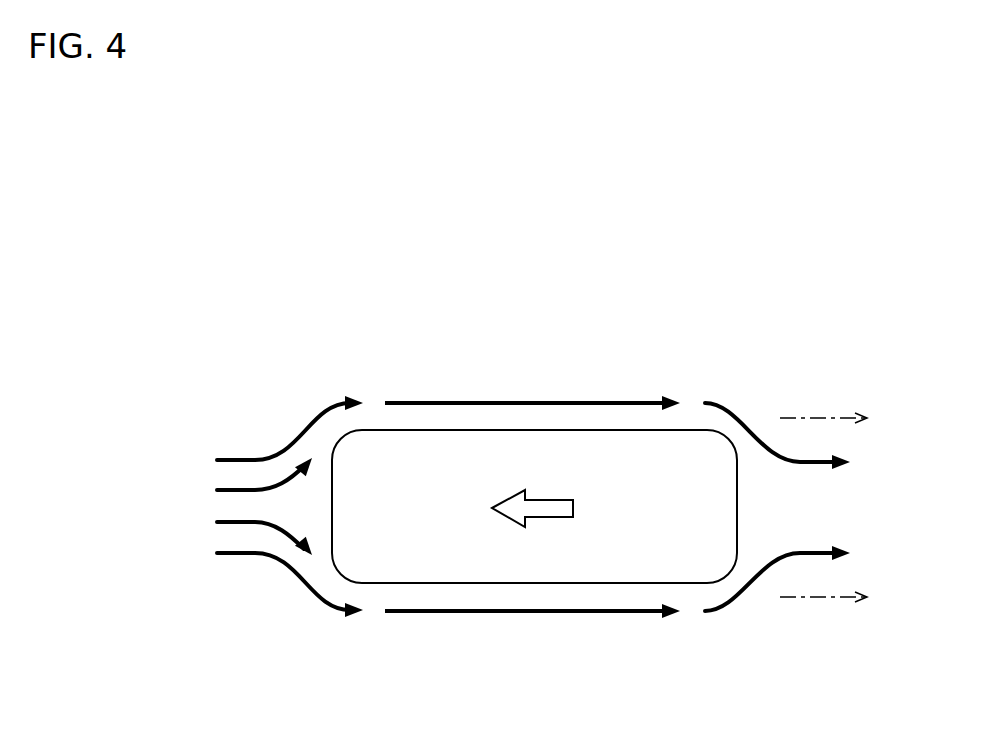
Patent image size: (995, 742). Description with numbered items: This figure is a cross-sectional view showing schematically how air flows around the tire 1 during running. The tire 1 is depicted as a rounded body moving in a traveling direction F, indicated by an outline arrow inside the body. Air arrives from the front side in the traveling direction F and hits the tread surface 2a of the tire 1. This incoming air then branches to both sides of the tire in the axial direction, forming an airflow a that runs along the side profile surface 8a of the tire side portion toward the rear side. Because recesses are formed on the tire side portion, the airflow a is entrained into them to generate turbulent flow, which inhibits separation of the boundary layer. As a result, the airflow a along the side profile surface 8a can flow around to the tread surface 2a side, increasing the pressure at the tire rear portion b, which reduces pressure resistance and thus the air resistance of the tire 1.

The tire 1 is at (683, 473).
The tread surface 2a is at (326, 507).
The side profile surface 8a is at (603, 586).
The airflow a is at (533, 614).
The tire rear portion b is at (786, 507).
The traveling direction F is at (550, 500).